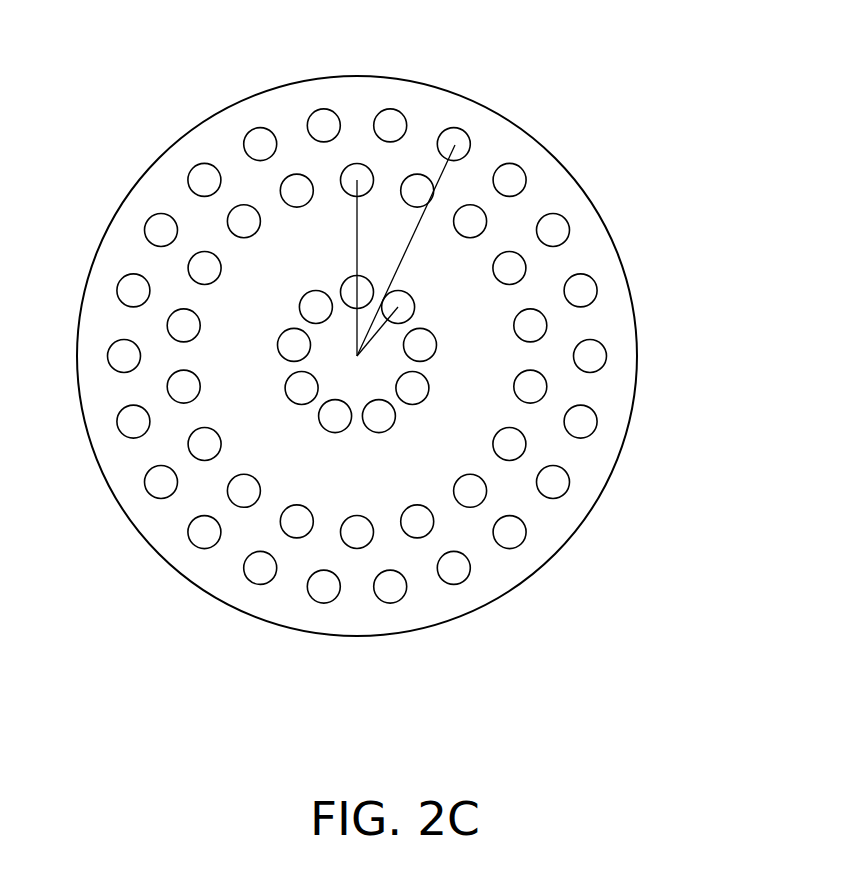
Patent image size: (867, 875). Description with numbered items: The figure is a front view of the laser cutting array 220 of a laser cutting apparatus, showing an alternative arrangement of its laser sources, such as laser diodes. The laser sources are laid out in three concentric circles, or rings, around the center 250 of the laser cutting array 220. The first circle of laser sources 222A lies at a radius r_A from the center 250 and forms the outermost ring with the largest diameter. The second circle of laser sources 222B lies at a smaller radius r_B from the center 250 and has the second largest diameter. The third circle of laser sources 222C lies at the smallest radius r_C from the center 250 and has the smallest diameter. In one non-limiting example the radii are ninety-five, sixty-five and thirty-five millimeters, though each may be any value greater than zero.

The laser cutting array 220 is at (150, 152).
The first circle of laser sources 222A is at (528, 204).
The second circle of laser sources 222B is at (529, 287).
The third circle of laser sources 222C is at (430, 405).
The center 250 is at (359, 361).